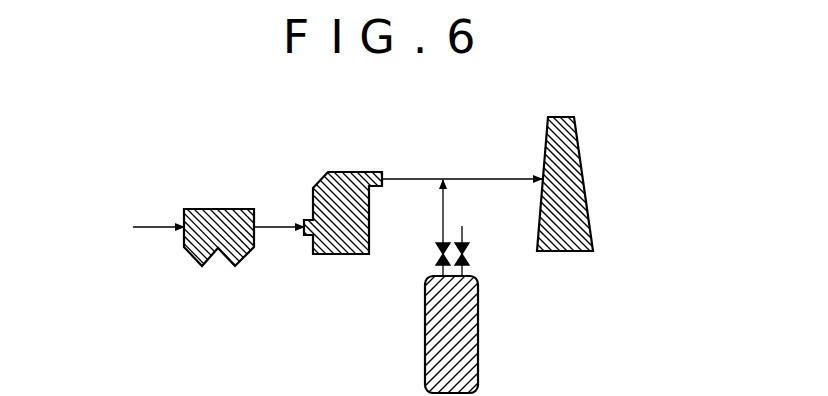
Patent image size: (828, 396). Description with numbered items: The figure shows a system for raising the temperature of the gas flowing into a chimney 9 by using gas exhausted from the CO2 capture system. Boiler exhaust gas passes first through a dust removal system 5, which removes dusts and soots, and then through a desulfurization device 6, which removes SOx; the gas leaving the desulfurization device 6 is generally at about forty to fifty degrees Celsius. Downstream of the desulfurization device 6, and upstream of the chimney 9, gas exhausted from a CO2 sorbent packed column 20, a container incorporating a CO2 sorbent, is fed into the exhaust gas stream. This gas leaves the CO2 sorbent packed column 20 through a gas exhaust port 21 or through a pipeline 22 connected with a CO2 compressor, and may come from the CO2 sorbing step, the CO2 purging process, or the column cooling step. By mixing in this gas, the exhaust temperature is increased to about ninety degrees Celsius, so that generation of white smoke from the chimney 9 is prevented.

The dust removal system 5 is at (217, 209).
The desulfurization device 6 is at (349, 172).
The chimney 9 is at (581, 156).
The CO2 sorbent packed column 20 is at (425, 338).
The gas exhaust port 21 is at (437, 268).
The pipeline connected with a CO2 compressor 22 is at (466, 232).